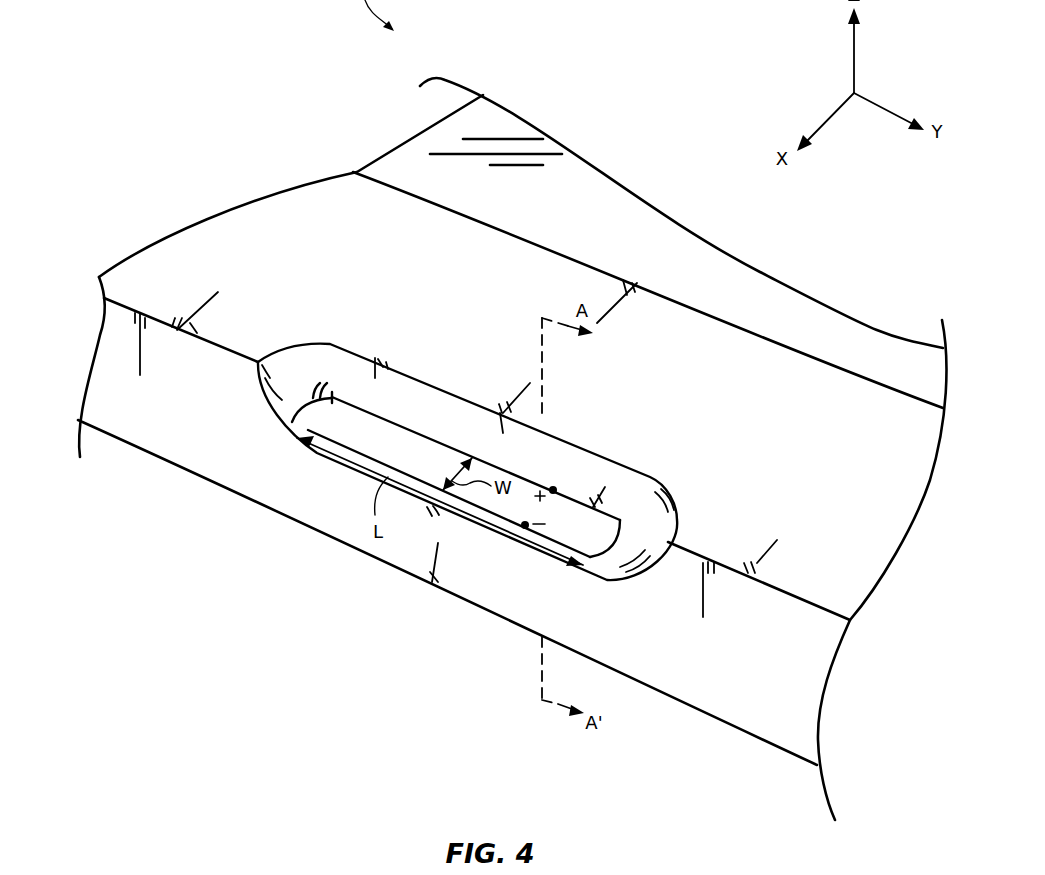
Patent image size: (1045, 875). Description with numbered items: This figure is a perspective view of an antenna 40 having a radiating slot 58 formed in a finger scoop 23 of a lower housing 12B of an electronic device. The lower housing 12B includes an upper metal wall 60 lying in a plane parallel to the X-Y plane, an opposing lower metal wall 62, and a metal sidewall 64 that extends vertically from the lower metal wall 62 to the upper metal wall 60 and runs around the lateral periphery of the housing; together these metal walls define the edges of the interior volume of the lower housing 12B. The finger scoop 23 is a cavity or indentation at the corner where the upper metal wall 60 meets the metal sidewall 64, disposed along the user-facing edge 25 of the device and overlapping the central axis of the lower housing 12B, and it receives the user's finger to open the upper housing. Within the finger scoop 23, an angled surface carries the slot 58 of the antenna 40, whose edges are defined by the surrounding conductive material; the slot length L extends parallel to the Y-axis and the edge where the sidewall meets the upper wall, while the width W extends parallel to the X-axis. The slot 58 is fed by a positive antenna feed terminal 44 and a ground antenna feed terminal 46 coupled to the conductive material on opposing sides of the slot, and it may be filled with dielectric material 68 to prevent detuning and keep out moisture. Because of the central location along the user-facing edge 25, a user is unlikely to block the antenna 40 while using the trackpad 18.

The lower housing 12B is at (153, 193).
The trackpad 18 is at (650, 218).
The upper metal wall 60 is at (266, 221).
The lower metal wall 62 is at (228, 490).
The metal sidewall 64 is at (114, 378).
The user-facing edge 25 is at (489, 653).
The finger scoop 23 is at (341, 344).
The dielectric material 68 is at (456, 470).
The slot 58 is at (357, 442).
The positive antenna feed terminal 44 is at (553, 487).
The ground antenna feed terminal 46 is at (525, 528).
The antenna 40 is at (588, 476).